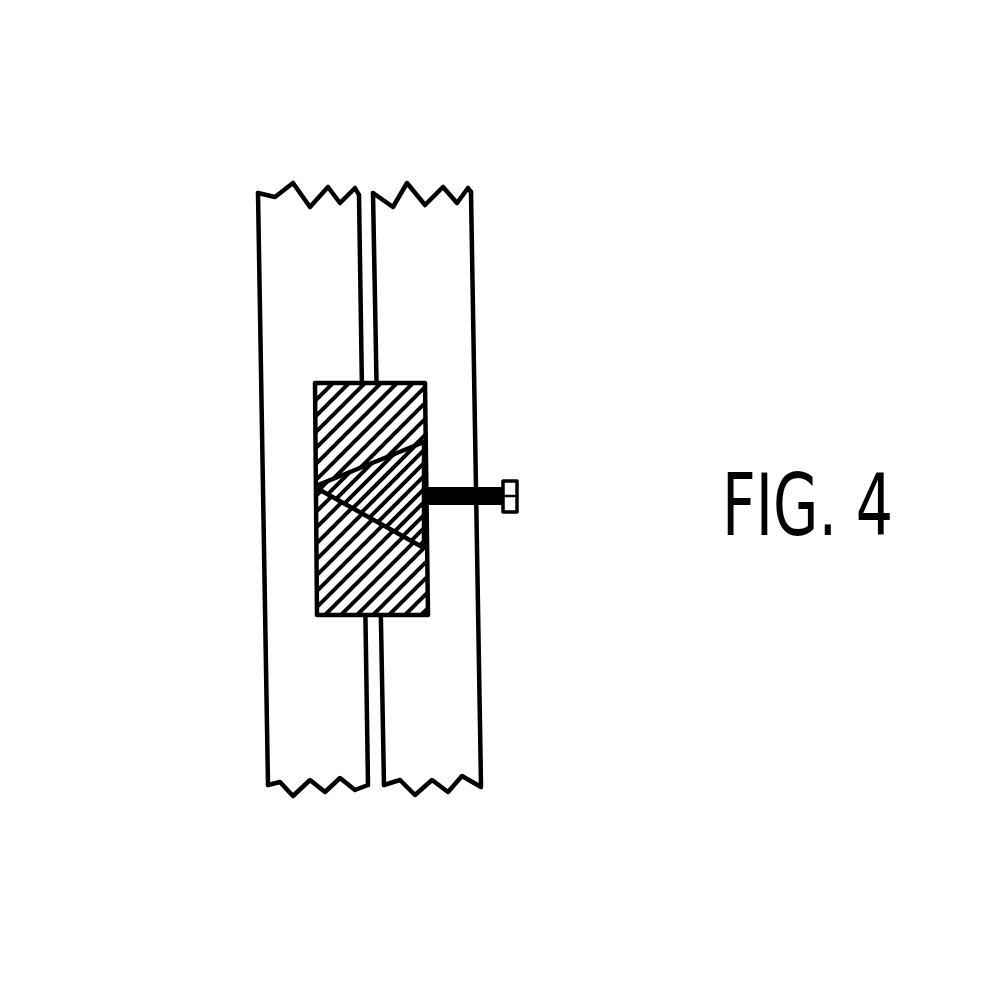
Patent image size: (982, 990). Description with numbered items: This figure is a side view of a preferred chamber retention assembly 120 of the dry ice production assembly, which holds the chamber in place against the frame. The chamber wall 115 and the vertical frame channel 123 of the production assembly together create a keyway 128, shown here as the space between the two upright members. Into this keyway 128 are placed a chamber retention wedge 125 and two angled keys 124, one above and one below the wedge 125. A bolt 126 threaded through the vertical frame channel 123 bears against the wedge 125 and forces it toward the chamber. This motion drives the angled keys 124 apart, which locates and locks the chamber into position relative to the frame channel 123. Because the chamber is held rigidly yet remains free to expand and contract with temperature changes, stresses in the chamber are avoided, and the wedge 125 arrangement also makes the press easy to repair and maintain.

The chamber wall 115 is at (287, 233).
The vertical frame channel 123 is at (423, 222).
The chamber retention assembly 120 is at (610, 253).
The keyway 128 is at (403, 370).
The angled keys 124 is at (313, 386).
The chamber retention wedge 125 is at (313, 496).
The bolt 126 is at (517, 508).